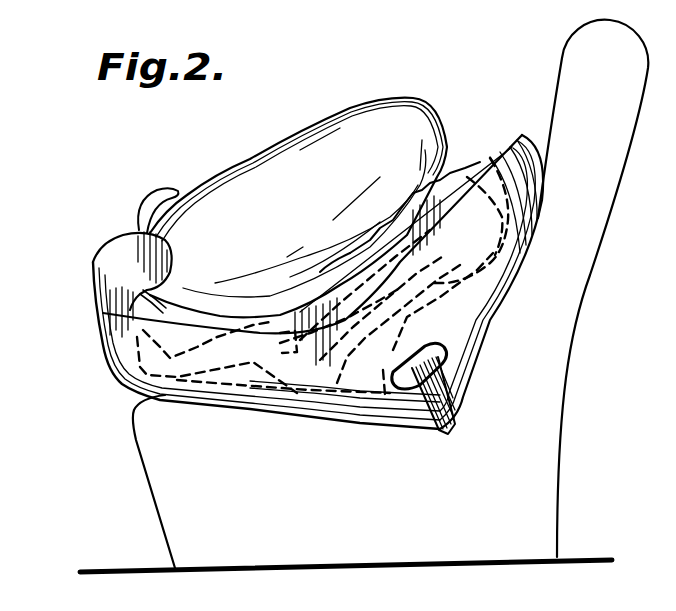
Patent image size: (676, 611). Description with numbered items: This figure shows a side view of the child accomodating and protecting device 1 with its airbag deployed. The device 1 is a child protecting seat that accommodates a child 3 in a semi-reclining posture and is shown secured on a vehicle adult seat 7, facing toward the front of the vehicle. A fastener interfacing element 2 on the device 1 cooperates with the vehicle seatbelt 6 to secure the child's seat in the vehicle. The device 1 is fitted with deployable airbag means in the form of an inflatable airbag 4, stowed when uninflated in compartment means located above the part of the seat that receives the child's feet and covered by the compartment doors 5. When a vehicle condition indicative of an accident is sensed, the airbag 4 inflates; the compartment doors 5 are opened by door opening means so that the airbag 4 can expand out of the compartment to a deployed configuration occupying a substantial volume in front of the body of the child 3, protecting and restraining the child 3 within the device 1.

The child accomodating and protecting device 1 is at (112, 352).
The fastener interfacing element 2 is at (440, 347).
The child 3 is at (440, 177).
The lid 4 is at (233, 163).
The compartment doors 5 is at (138, 205).
The vehicle seatbelt 6 is at (430, 380).
The vehicle adult seat 7 is at (558, 443).